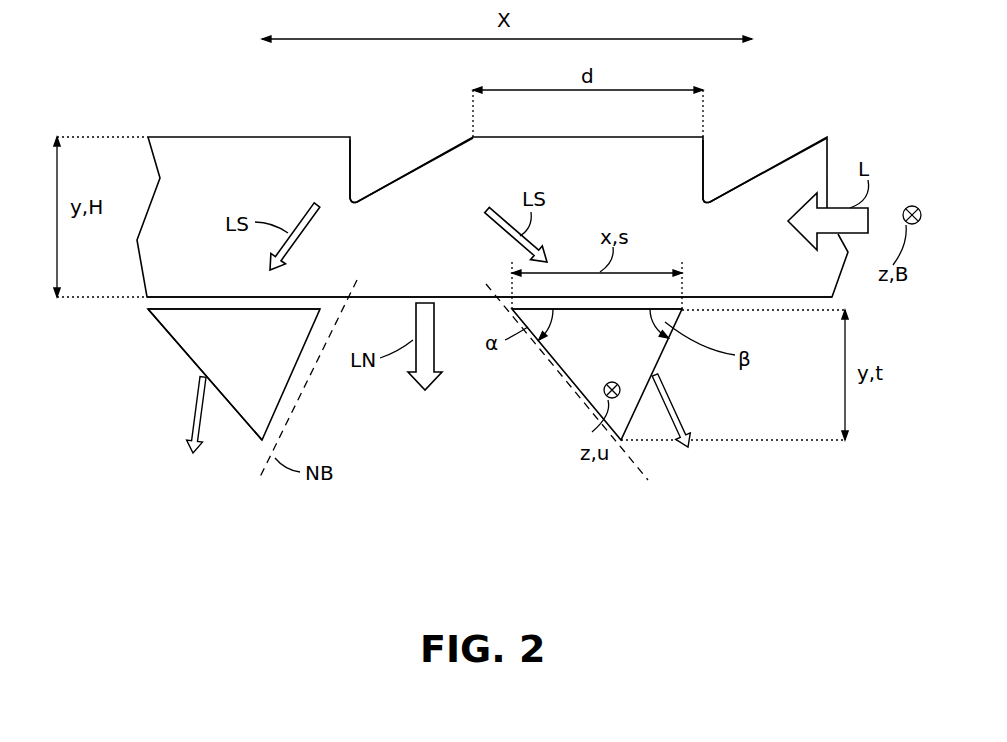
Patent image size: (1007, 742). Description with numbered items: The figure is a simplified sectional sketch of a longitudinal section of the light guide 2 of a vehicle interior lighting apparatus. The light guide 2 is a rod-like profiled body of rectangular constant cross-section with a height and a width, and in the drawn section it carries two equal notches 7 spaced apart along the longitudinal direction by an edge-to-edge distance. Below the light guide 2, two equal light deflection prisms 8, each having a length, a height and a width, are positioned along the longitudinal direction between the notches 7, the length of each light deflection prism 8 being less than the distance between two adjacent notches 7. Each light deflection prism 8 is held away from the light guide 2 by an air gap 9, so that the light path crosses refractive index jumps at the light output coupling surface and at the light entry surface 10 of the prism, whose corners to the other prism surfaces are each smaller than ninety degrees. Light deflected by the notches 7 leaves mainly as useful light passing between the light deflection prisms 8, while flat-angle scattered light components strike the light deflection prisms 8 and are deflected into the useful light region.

The light guide 2 is at (207, 137).
The notch 7 is at (350, 165).
The light deflection prism 8 is at (195, 365).
The air gap 9 is at (148, 301).
The light entry surface 10 is at (203, 311).